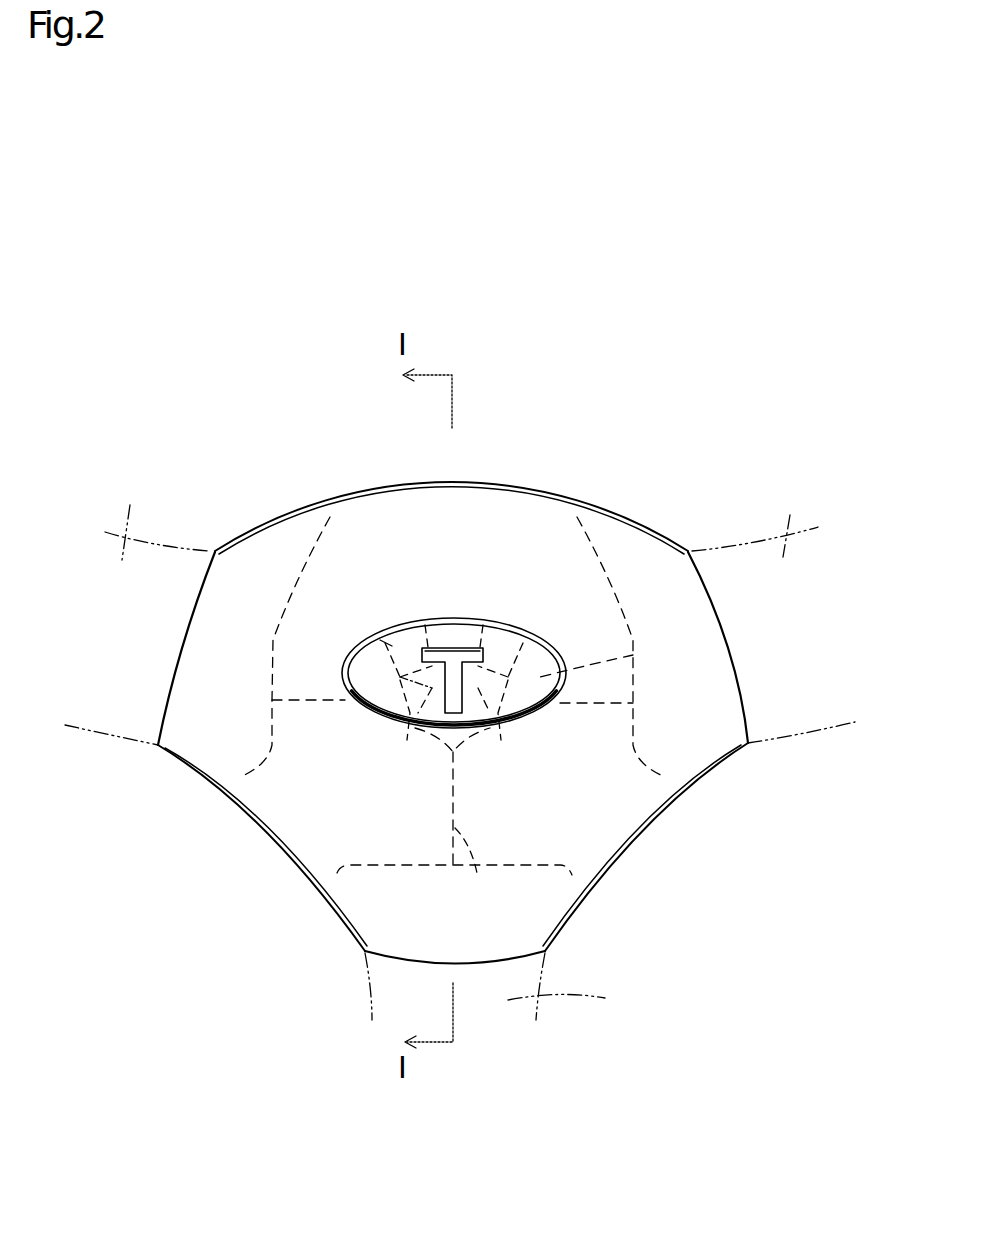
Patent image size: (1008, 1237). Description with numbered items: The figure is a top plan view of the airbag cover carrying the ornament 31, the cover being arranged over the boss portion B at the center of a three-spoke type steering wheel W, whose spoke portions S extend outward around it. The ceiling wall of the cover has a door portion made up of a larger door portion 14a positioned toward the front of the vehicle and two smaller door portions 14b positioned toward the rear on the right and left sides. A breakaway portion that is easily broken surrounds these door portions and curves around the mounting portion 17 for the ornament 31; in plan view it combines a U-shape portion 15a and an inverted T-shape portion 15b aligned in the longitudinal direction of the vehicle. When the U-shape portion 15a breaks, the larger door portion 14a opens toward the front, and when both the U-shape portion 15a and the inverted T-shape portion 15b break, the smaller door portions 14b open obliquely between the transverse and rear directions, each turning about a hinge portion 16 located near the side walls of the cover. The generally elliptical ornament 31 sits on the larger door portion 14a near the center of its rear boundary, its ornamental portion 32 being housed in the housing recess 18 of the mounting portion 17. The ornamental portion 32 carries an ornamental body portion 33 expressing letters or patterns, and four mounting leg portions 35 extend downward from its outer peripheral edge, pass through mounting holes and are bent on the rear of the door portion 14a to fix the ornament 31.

The larger door portion 14a is at (352, 545).
The smaller door portions 14b is at (307, 792).
The U-shape portion 15a is at (624, 596).
The inverted T-shape portion 15b is at (478, 866).
The hinge portion 16 is at (520, 506).
The mounting portion 17 is at (452, 620).
The housing recess 18 is at (633, 653).
The ornament 31 is at (478, 622).
The ornamental portion 32 is at (530, 715).
The ornamental body portion 33 is at (437, 656).
The mounting leg portions 35 is at (368, 640).
The spoke portions S is at (460, 746).
The steering wheel W is at (206, 914).
The boss portion B is at (308, 946).